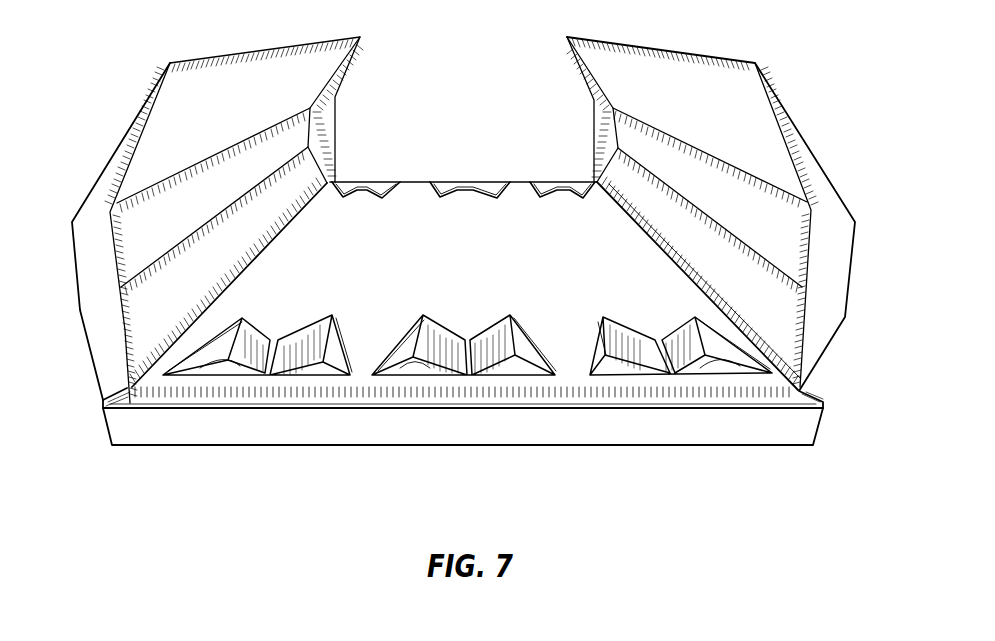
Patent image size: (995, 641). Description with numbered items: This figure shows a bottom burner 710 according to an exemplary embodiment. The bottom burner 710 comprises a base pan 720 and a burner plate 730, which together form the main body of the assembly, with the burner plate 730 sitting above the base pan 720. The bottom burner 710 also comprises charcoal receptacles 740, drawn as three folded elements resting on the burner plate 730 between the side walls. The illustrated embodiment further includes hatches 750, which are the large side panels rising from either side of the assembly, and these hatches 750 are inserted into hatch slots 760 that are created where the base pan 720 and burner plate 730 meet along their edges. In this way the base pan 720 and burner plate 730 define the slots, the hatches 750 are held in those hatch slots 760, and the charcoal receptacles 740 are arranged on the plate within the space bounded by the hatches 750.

The bottom burner 710 is at (227, 478).
The base pan 720 is at (445, 420).
The burner plate 730 is at (432, 227).
The charcoal receptacles 740 is at (300, 343).
The hatches 750 is at (255, 172).
The hatch slots 760 is at (125, 392).